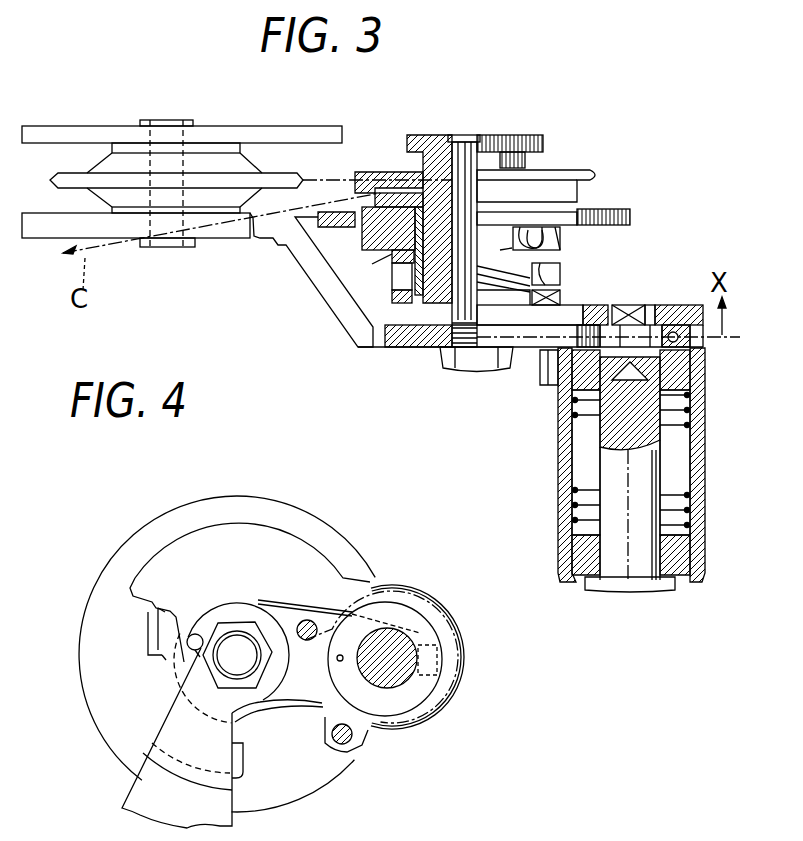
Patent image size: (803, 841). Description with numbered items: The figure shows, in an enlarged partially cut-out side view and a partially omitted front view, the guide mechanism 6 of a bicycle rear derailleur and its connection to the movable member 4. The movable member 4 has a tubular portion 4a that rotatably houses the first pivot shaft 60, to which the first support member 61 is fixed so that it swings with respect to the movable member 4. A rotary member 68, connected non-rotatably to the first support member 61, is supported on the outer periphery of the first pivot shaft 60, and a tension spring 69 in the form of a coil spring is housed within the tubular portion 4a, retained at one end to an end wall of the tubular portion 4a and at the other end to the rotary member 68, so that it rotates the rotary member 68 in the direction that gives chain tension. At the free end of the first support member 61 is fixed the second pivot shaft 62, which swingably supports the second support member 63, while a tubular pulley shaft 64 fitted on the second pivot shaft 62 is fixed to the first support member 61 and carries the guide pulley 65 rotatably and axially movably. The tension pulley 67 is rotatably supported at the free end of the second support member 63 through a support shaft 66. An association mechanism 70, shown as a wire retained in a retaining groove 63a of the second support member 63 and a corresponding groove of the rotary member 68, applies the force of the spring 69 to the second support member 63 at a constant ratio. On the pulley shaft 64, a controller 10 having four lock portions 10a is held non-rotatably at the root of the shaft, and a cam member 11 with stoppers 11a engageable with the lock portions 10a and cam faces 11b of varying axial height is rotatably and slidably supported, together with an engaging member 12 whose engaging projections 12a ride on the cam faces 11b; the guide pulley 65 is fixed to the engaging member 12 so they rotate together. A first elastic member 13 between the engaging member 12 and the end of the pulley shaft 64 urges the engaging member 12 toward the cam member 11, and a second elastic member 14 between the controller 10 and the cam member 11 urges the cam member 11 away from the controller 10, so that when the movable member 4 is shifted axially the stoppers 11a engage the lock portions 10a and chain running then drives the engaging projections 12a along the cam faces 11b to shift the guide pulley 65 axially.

In FIG. 3, the movable member 4 is at (705, 513).
In FIG. 3, the tubular portion 4a is at (565, 500).
In FIG. 4, the tubular portion 4a is at (442, 697).
In FIG. 3, the guide mechanism 6 is at (370, 160).
In FIG. 3, the controller 10 is at (427, 300).
In FIG. 4, the controller 10 is at (153, 627).
In FIG. 3, the lock portions 10a is at (390, 302).
In FIG. 4, the lock portions 10a is at (150, 660).
In FIG. 3, the cam member 11 is at (395, 290).
In FIG. 3, the stoppers 11a is at (387, 308).
In FIG. 3, the cam faces 11b is at (560, 238).
In FIG. 3, the engaging member 12 is at (612, 210).
In FIG. 4, the engaging member 12 is at (113, 568).
In FIG. 3, the engaging projections 12a is at (362, 262).
In FIG. 3, the first elastic member 13 is at (515, 150).
In FIG. 3, the second elastic member 14 is at (507, 290).
In FIG. 3, the first pivot shaft 60 is at (660, 475).
In FIG. 4, the first pivot shaft 60 is at (397, 627).
In FIG. 3, the first support member 61 is at (679, 305).
In FIG. 4, the first support member 61 is at (277, 537).
In FIG. 3, the second pivot shaft 62 is at (463, 135).
In FIG. 4, the second pivot shaft 62 is at (238, 640).
In FIG. 3, the second support member 63 is at (292, 250).
In FIG. 4, the second support member 63 is at (137, 790).
In FIG. 4, the retaining groove 63a is at (203, 648).
In FIG. 3, the pulley shaft 64 is at (432, 135).
In FIG. 3, the guide pulley 65 is at (585, 170).
In FIG. 3, the support shaft 66 is at (186, 142).
In FIG. 3, the tension pulley 67 is at (80, 173).
In FIG. 3, the rotary member 68 is at (683, 377).
In FIG. 4, the rotary member 68 is at (423, 625).
In FIG. 3, the tension spring 69 is at (686, 427).
In FIG. 3, the association mechanism 70 is at (533, 335).
In FIG. 4, the association mechanism 70 is at (315, 607).